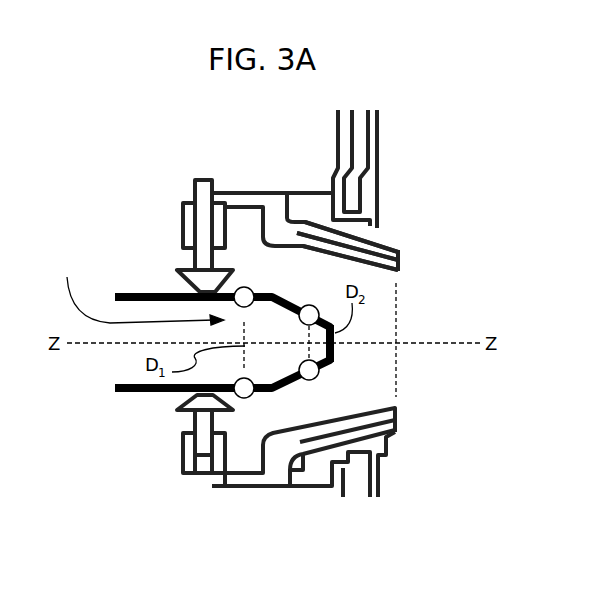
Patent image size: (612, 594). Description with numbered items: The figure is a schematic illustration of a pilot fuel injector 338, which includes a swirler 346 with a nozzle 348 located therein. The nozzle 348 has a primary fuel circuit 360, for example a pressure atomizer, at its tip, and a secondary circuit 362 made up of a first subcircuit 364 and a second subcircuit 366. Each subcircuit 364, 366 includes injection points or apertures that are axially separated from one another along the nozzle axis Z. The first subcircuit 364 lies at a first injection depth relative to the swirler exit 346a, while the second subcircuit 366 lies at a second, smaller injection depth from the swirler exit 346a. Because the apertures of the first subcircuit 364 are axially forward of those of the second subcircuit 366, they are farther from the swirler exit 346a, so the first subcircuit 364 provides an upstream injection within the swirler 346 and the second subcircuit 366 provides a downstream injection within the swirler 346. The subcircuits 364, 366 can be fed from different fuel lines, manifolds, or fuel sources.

The pilot fuel injector 338 is at (397, 139).
The swirler 346 is at (374, 262).
The swirler exit 346a is at (397, 313).
The nozzle 348 is at (147, 292).
The primary fuel circuit 360 is at (333, 350).
The secondary circuit 362 is at (139, 290).
The first subcircuit 364 is at (245, 288).
The second subcircuit 366 is at (311, 306).